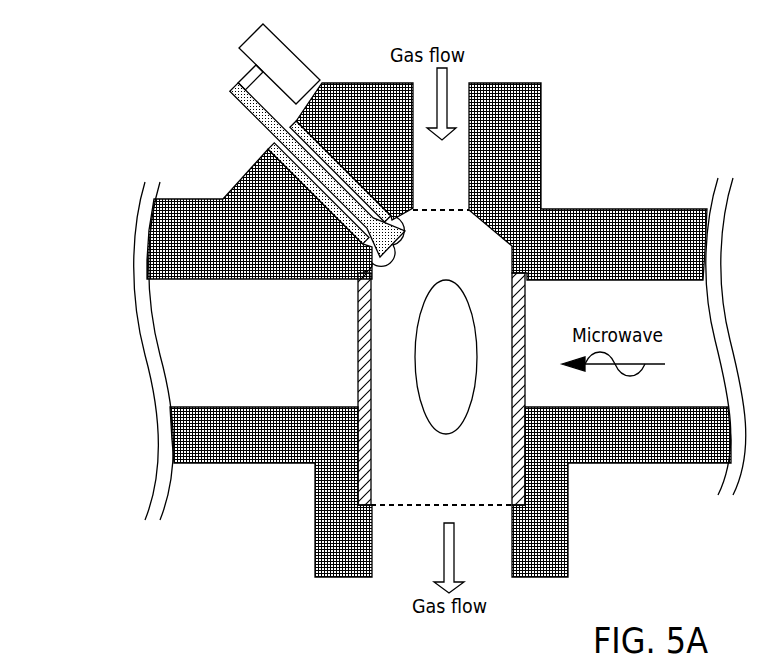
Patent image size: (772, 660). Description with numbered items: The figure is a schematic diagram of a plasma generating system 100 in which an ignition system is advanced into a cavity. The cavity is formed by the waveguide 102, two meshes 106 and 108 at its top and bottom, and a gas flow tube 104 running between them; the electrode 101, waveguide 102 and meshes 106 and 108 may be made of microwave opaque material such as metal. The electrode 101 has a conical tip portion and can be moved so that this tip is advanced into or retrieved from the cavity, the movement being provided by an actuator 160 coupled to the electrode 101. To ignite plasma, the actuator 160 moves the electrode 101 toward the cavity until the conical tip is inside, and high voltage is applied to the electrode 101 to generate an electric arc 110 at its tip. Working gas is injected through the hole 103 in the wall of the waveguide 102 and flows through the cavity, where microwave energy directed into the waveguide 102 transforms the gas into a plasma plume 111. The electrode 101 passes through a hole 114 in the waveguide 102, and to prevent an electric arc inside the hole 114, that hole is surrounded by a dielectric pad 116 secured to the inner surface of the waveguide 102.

The plasma generating system 100 is at (61, 65).
The electrode 101 is at (236, 86).
The waveguide 102 is at (237, 283).
The hole 103 is at (458, 83).
The gas flow tube 104 is at (357, 338).
The mesh 106 is at (452, 211).
The mesh 108 is at (400, 506).
The electric arc 110 is at (373, 267).
The plasma plume 111 is at (458, 432).
The hole 114 is at (273, 136).
The dielectric pad 116 is at (268, 146).
The actuator 160 is at (251, 35).